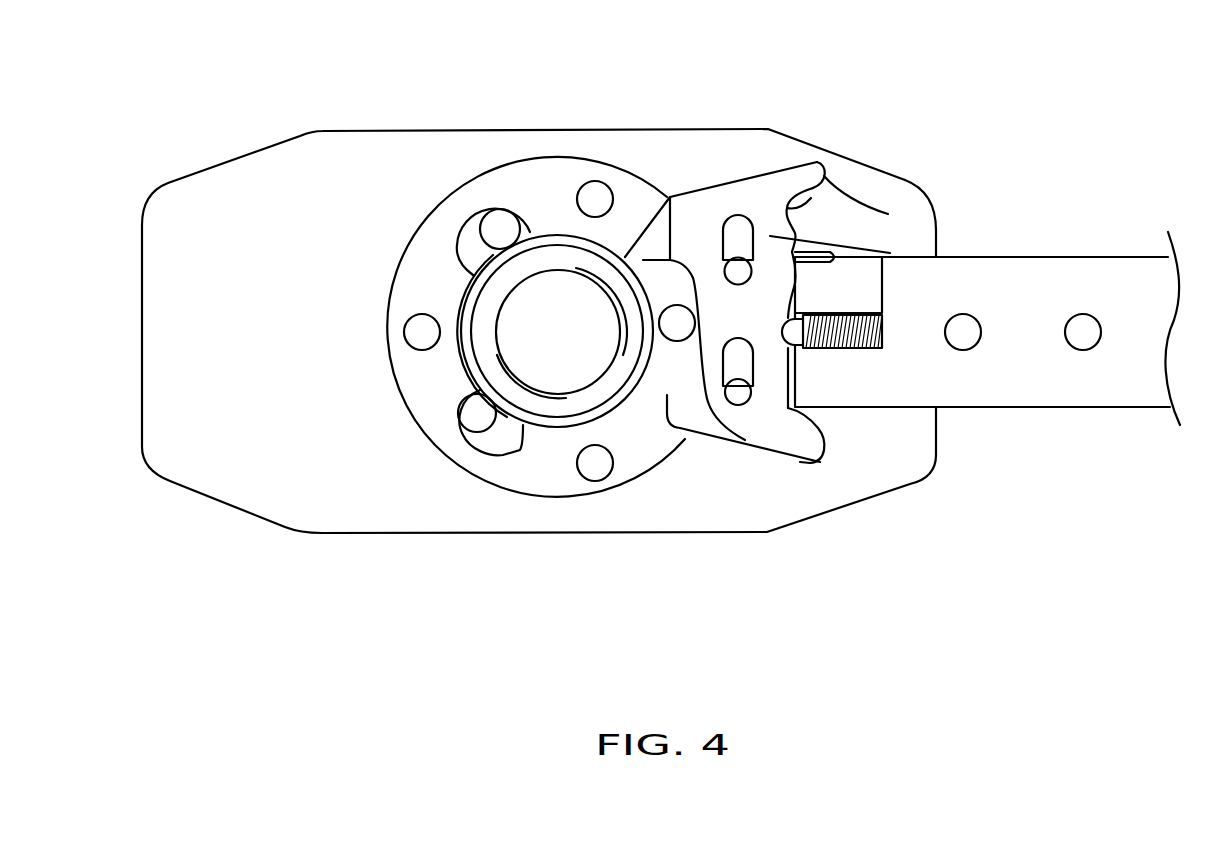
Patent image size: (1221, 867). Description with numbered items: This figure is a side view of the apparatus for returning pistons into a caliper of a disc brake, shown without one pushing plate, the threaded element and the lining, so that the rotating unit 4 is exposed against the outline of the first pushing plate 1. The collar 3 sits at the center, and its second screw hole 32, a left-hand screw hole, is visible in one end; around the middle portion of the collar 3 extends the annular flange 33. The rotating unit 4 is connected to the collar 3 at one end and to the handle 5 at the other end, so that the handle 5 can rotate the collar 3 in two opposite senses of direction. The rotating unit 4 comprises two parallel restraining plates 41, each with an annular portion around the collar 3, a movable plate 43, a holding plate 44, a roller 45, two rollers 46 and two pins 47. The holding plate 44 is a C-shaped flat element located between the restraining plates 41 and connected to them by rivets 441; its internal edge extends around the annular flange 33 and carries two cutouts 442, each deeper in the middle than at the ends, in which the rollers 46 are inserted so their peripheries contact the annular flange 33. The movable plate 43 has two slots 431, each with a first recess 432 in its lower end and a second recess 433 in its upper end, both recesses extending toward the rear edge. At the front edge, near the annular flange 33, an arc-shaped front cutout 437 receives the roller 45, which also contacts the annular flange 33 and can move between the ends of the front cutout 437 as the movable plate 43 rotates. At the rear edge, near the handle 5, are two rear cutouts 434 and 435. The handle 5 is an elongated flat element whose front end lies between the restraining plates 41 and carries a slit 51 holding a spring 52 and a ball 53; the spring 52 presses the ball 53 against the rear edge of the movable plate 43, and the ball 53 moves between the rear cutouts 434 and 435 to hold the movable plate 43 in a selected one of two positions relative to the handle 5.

The first pushing plate 1 is at (206, 162).
The collar 3 is at (645, 226).
The rotating unit 4 is at (554, 146).
The handle 5 is at (1048, 254).
The second screw hole 32 is at (548, 395).
The annular flange 33 is at (565, 233).
The restraining plates 41 is at (808, 230).
The movable plate 43 is at (789, 165).
The holding plate 44 is at (437, 428).
The roller 45 is at (785, 412).
The rollers 46 is at (505, 218).
The pins 47 is at (738, 265).
The slit 51 is at (878, 290).
The spring 52 is at (872, 302).
The ball 53 is at (795, 350).
The slots 431 is at (840, 200).
The first recess 432 is at (822, 250).
The second recess 433 is at (811, 184).
The rear cutout 434 is at (762, 398).
The rear cutout 435 is at (677, 328).
The front cutout 437 is at (691, 268).
The rivets 441 is at (414, 322).
The cutouts 442 is at (481, 222).